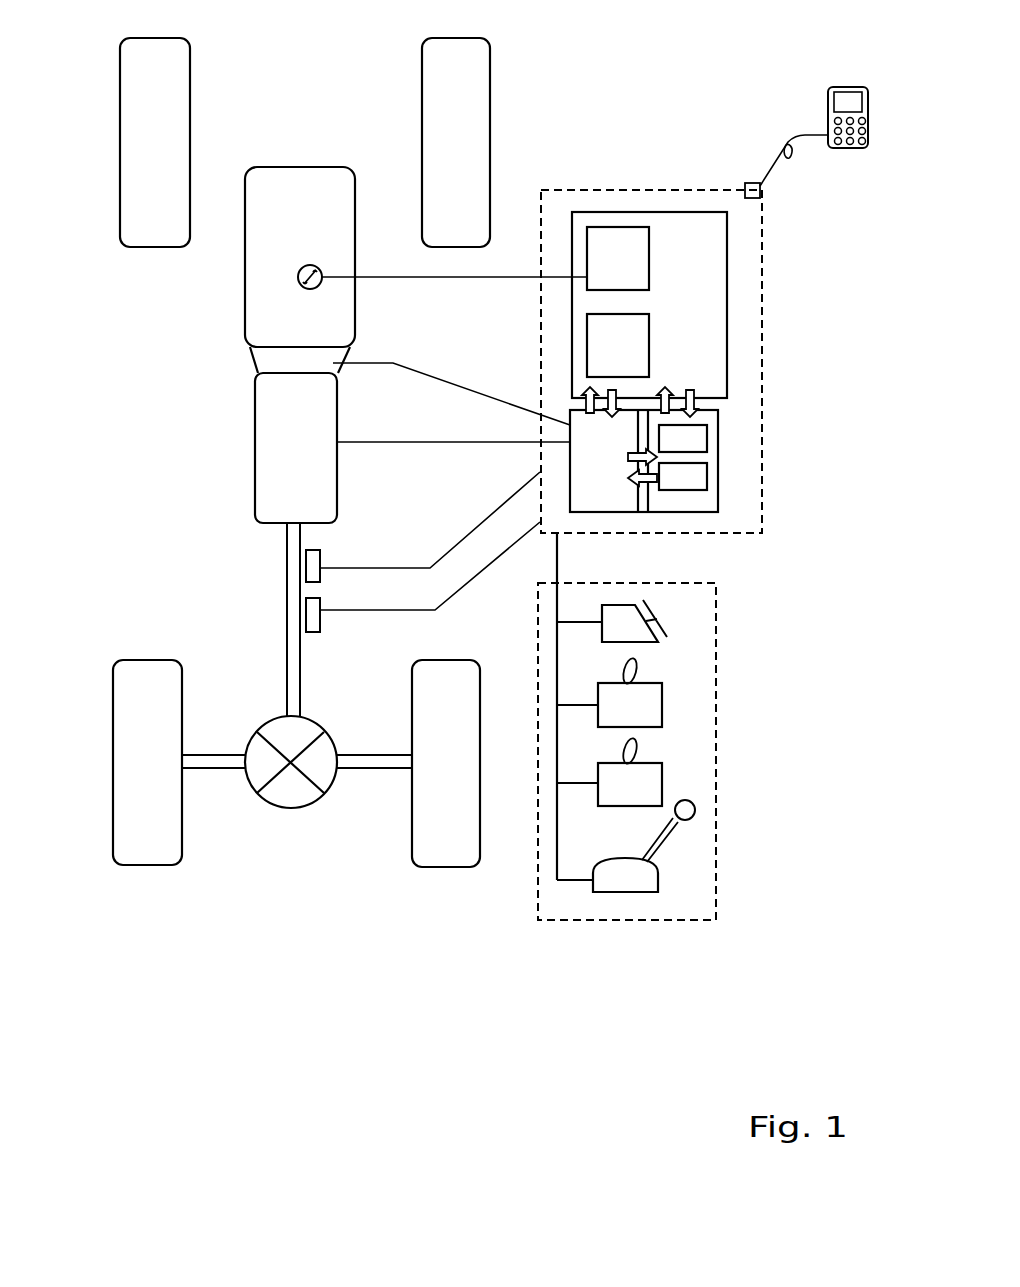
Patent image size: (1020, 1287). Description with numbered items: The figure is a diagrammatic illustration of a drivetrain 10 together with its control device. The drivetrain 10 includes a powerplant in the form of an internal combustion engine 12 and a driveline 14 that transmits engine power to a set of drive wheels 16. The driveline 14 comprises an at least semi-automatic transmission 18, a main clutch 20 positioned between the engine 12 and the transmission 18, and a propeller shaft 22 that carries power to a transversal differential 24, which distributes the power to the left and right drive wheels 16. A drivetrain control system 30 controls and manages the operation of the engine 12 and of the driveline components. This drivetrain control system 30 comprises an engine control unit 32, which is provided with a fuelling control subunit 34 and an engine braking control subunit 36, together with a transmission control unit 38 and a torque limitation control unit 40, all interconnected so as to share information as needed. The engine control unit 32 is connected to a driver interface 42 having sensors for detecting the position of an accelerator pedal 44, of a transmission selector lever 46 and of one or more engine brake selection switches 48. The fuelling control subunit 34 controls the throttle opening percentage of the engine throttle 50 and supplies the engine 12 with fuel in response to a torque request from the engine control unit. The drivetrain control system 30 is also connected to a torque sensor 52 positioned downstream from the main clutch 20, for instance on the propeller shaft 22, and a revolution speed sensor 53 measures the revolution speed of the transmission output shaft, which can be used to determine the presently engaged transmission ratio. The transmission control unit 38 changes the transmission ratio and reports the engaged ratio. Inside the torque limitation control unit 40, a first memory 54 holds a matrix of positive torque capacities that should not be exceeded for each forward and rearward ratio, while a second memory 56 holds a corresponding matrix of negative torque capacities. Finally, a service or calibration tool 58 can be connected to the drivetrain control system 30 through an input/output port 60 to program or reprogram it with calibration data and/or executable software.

The drivetrain 10 is at (140, 352).
The internal combustion engine 12 is at (275, 313).
The driveline 14 is at (160, 548).
The drive wheels 16 is at (138, 748).
The at least semi-automatic transmission 18 is at (275, 436).
The main clutch 20 is at (270, 358).
The propeller shaft 22 is at (295, 682).
The transversal differential 24 is at (245, 782).
The drivetrain control system 30 is at (675, 190).
The engine control unit 32 is at (727, 258).
The fuelling control subunit 34 is at (608, 227).
The engine braking control subunit 36 is at (649, 342).
The transmission control unit 38 is at (610, 512).
The torque limitation control unit 40 is at (718, 410).
The driver interface 42 is at (650, 920).
The accelerator pedal 44 is at (623, 627).
The transmission selector lever 46 is at (642, 875).
The engine brake selection switches 48 is at (632, 710).
The engine throttle 50 is at (305, 265).
The torque sensor 52 is at (307, 560).
The revolution speed sensor 53 is at (307, 615).
The first memory 54 is at (707, 440).
The second memory 56 is at (707, 478).
The service or calibration tool 58 is at (845, 87).
The input/output port 60 is at (762, 198).